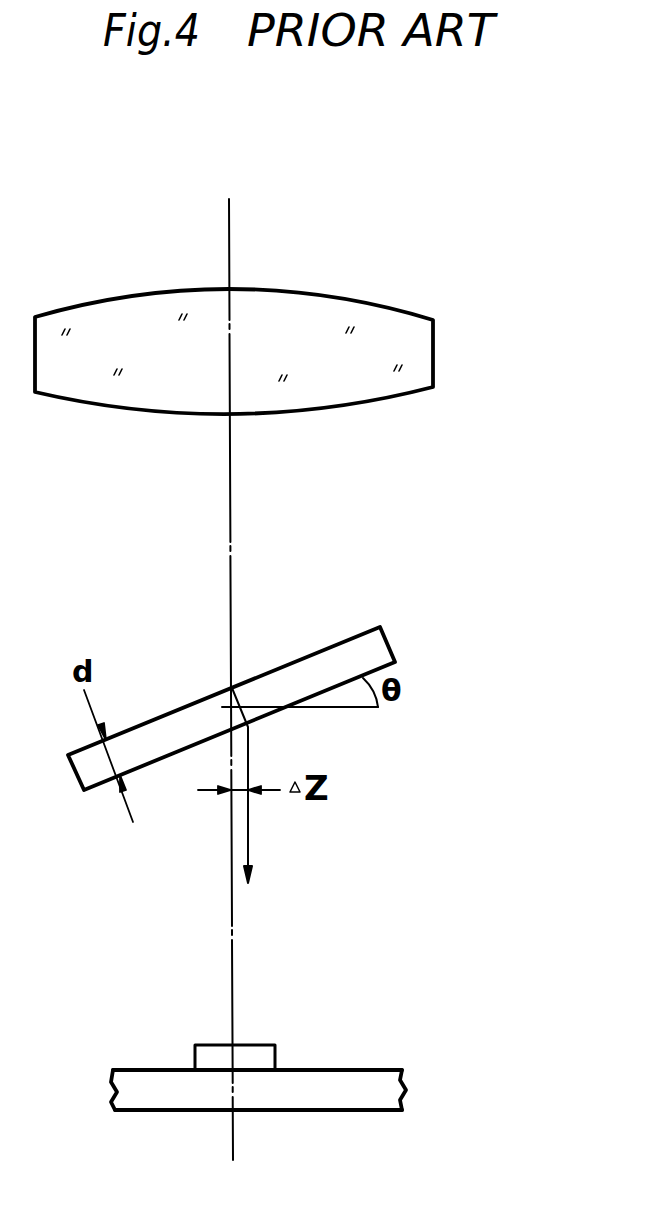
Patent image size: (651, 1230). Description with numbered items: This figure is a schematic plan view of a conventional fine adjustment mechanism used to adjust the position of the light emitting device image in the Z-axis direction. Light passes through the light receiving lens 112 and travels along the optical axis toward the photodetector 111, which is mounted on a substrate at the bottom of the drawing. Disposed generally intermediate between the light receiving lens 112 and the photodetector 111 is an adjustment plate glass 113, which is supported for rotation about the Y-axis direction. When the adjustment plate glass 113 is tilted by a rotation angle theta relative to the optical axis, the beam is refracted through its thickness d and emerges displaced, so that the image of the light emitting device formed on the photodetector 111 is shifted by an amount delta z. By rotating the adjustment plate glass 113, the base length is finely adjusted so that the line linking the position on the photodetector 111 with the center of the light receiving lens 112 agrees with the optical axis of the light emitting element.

The photodetector 111 is at (262, 1058).
The light receiving lens 112 is at (415, 323).
The adjustment plate glass 113 is at (375, 652).